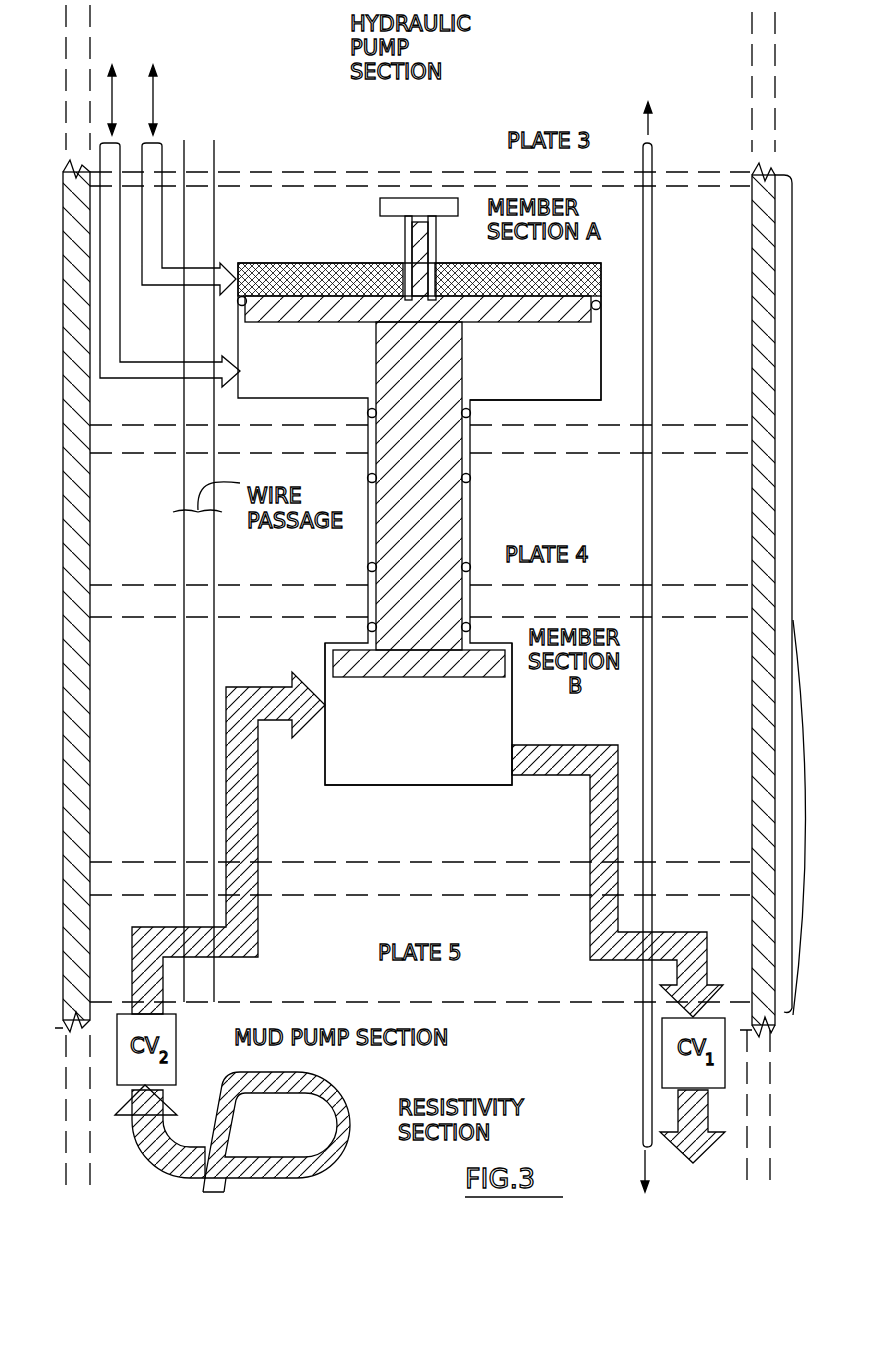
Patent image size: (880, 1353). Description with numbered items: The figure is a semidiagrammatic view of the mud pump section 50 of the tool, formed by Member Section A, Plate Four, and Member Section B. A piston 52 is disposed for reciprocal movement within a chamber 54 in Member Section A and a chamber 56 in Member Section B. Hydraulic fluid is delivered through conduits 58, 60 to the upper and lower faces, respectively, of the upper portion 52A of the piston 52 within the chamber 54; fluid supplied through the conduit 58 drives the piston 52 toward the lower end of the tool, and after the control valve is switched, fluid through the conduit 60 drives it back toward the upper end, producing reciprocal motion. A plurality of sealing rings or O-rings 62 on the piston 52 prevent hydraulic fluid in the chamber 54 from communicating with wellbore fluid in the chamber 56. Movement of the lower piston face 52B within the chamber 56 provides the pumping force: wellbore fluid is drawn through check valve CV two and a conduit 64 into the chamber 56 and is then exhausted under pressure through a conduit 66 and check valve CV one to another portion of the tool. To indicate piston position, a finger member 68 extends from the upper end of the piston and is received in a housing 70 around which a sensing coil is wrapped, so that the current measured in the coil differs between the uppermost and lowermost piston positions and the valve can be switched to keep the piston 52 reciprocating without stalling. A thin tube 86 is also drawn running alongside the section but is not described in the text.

The mud pump section 50 is at (800, 740).
The piston 52 is at (432, 528).
The upper portion of the piston 52A is at (282, 330).
The lower piston face 52B is at (452, 678).
The chamber 54 is at (548, 370).
The chamber 56 is at (432, 760).
The conduit 58 is at (163, 198).
The conduit 60 is at (118, 310).
The sealing rings or O-rings 62 is at (468, 563).
The conduit 64 is at (258, 927).
The conduit 66 is at (717, 1148).
The finger member 68 is at (410, 295).
The housing 70 is at (415, 197).
The tube 86 is at (640, 1062).